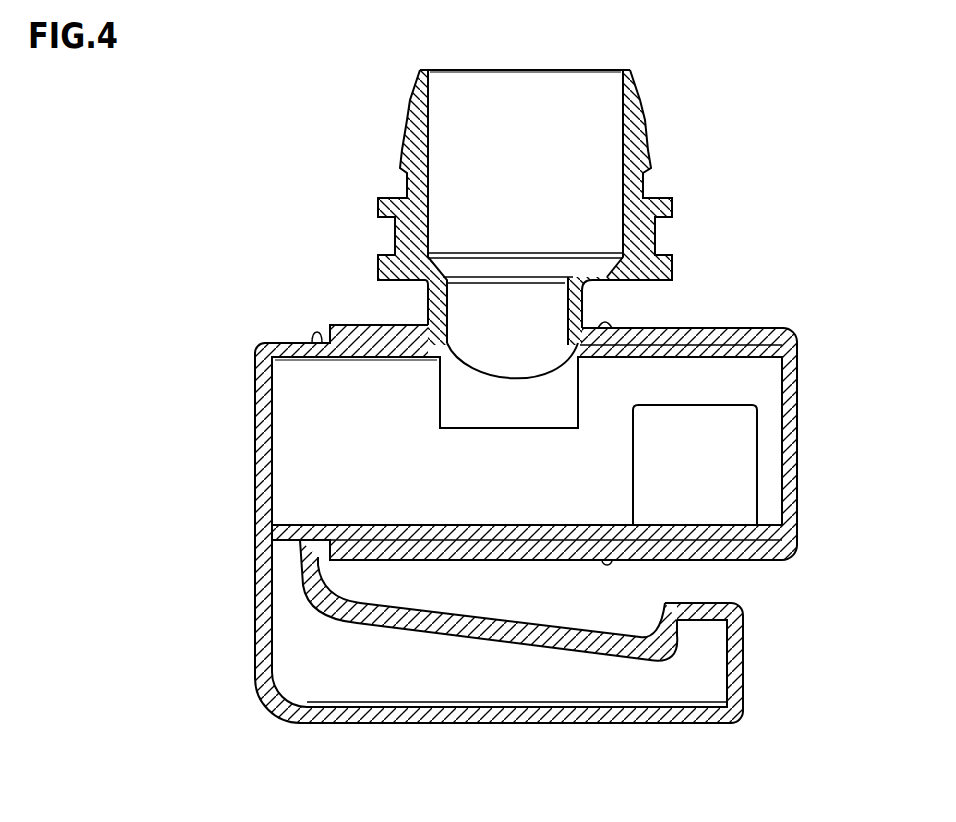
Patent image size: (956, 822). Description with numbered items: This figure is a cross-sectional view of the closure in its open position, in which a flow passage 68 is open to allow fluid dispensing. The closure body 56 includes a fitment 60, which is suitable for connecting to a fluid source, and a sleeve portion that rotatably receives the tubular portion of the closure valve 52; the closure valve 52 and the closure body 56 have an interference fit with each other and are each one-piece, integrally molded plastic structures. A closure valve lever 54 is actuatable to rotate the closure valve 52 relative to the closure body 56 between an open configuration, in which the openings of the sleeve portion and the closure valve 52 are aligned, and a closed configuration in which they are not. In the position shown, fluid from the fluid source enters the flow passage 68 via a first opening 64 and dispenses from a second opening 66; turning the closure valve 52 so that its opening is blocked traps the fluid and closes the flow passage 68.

The closure valve 52 is at (254, 443).
The closure valve lever 54 is at (374, 722).
The closure body 56 is at (762, 328).
The fitment 60 is at (410, 135).
The first opening 64 is at (530, 70).
The second opening 66 is at (718, 477).
The flow passage 68 is at (553, 165).